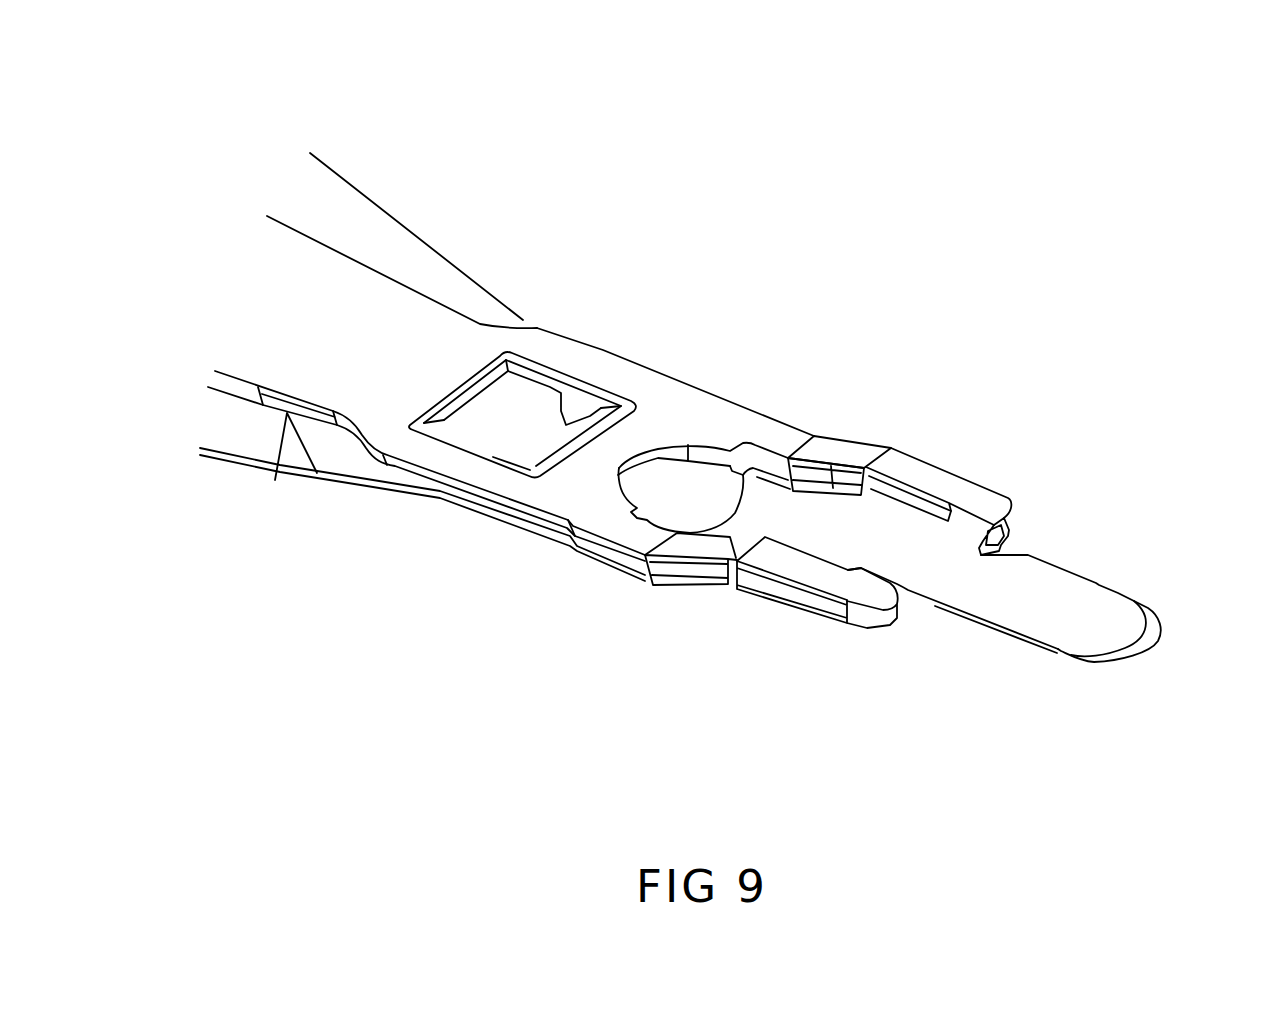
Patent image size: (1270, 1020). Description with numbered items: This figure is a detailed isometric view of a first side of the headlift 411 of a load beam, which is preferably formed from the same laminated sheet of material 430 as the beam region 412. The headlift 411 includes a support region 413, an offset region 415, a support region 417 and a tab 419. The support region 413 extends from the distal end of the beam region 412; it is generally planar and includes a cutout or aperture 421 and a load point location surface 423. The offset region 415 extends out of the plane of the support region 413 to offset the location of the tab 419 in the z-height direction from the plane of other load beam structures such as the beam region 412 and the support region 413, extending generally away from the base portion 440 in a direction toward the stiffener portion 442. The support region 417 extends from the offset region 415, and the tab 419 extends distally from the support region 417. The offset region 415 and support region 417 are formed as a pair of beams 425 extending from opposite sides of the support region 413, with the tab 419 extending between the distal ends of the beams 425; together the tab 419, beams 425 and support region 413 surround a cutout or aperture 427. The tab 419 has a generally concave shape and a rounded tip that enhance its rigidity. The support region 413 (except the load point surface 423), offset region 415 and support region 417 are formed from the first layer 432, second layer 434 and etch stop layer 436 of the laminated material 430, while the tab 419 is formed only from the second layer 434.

The headlift 411 is at (773, 330).
The beam region 412 is at (488, 256).
The support region 413 is at (671, 343).
The offset region 415 is at (890, 427).
The support region 417 is at (979, 435).
The tab 419 is at (1098, 585).
The cutout or aperture 421 is at (490, 427).
The load point location surface 423 is at (705, 502).
The beams 425 is at (964, 497).
The cutout or aperture 427 is at (867, 543).
The laminated sheet of material 430 is at (287, 415).
The first layer 432 is at (451, 500).
The second layer 434 is at (583, 545).
The etch stop layer 436 is at (523, 518).
The base portion 440 is at (365, 247).
The stiffener portion 442 is at (255, 320).